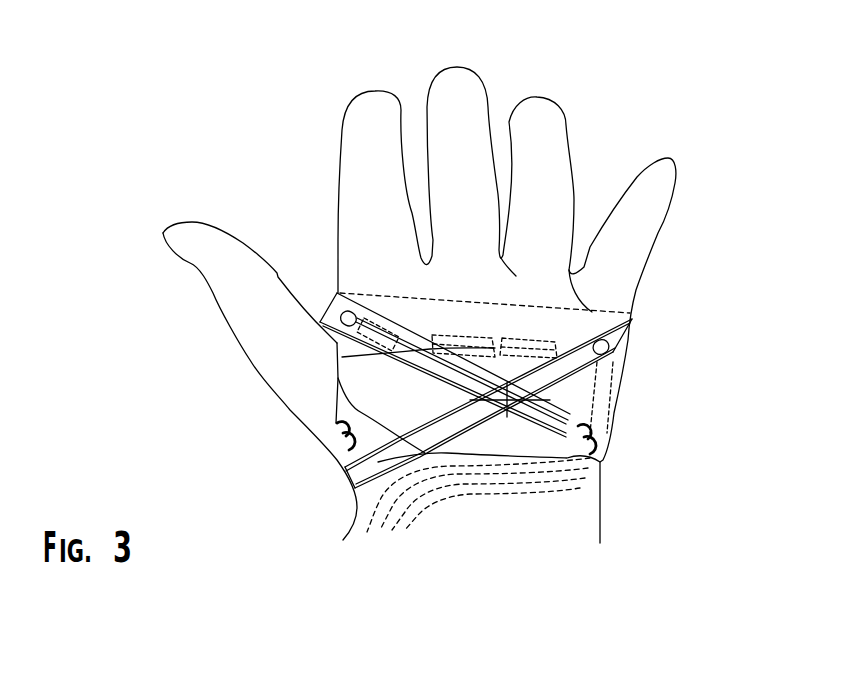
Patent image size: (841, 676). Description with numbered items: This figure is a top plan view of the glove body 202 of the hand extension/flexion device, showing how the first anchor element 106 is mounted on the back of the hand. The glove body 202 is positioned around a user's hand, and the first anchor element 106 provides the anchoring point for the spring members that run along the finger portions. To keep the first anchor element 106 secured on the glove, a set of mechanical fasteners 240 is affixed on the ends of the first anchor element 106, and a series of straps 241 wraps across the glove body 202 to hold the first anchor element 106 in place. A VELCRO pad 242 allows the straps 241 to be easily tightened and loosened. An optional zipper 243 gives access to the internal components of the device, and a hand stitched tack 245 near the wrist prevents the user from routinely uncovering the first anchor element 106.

The glove body 202 is at (357, 116).
The first anchor element 106 is at (335, 398).
The mechanical fasteners 240 is at (333, 437).
The straps 241 is at (303, 363).
The VELCRO pad 242 is at (365, 315).
The zipper 243 is at (615, 413).
The hand stitched tack 245 is at (375, 512).